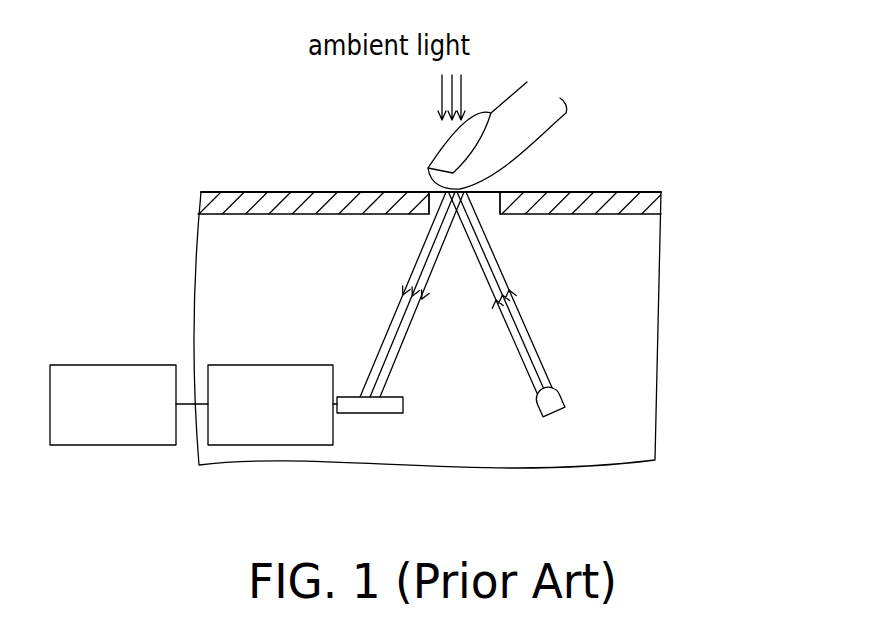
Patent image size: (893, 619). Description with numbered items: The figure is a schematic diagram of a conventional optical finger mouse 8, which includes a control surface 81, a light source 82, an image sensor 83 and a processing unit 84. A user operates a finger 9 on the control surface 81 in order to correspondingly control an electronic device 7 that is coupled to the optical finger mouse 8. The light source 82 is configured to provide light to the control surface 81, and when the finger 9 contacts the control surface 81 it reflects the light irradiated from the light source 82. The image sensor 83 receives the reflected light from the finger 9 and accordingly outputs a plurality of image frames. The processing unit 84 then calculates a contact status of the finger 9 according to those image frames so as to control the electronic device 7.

The electronic device 7 is at (133, 365).
The optical finger mouse 8 is at (660, 308).
The control surface 81 is at (487, 193).
The light source 82 is at (557, 413).
The image sensor 83 is at (370, 413).
The processing unit 84 is at (260, 445).
The finger 9 is at (527, 82).